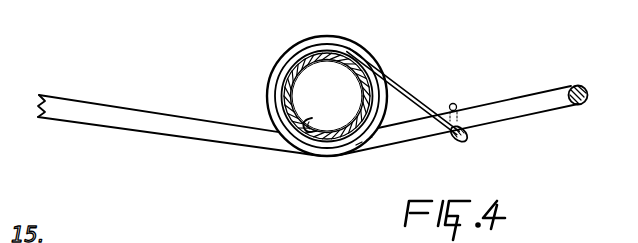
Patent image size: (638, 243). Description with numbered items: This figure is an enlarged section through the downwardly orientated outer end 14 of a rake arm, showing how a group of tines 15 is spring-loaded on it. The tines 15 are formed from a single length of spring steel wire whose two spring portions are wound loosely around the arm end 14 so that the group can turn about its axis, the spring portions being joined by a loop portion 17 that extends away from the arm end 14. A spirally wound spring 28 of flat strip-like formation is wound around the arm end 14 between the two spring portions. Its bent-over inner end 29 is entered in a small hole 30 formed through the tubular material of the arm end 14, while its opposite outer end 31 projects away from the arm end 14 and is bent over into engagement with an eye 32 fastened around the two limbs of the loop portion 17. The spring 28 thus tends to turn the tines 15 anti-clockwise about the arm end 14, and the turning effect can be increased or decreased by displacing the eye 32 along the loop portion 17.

The outer end 14 is at (296, 87).
The group of tines 15 is at (112, 125).
The loop portion 17 is at (556, 91).
The spirally wound spring 28 is at (278, 93).
The bent-over inner end 29 is at (313, 134).
The small hole 30 is at (316, 127).
The outer end 31 is at (445, 118).
The eye 32 is at (469, 137).